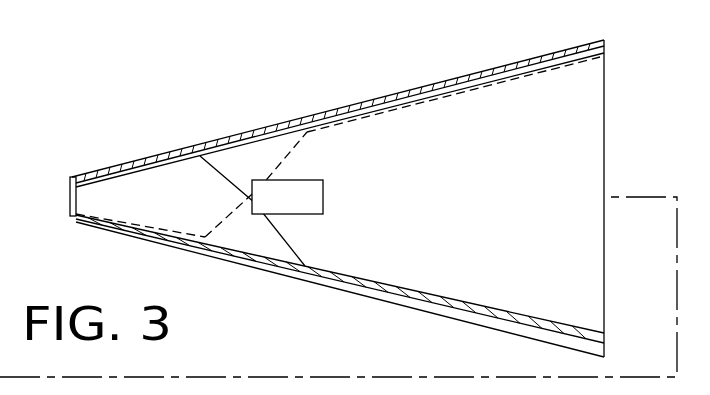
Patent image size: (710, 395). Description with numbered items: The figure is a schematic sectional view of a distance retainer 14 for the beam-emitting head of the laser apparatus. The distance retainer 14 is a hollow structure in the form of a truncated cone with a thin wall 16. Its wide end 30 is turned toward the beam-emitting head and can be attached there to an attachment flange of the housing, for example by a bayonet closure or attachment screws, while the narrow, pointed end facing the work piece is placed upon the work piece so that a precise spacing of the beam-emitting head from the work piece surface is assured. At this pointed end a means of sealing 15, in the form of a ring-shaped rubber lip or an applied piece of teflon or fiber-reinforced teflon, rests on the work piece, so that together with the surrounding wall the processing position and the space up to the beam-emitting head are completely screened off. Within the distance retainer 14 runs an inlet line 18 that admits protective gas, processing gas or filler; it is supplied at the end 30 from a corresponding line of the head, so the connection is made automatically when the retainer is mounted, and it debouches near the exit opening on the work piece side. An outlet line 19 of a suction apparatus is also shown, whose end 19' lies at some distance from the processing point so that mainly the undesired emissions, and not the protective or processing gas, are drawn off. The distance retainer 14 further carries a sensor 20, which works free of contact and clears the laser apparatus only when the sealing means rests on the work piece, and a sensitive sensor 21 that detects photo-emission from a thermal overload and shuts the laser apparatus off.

The distance retainer 14 is at (380, 296).
The means of sealing 15 is at (72, 199).
The thin wall 16 is at (330, 108).
The inlet line 18 is at (470, 90).
The outlet line 19 is at (340, 284).
The end of the outlet line 19' is at (253, 231).
The sensor 20 is at (287, 197).
The sensitive sensor 21 is at (305, 180).
The end 30 is at (606, 357).